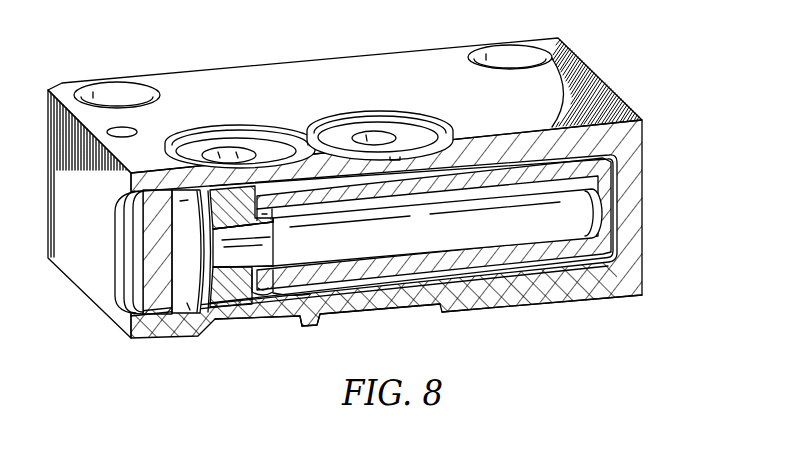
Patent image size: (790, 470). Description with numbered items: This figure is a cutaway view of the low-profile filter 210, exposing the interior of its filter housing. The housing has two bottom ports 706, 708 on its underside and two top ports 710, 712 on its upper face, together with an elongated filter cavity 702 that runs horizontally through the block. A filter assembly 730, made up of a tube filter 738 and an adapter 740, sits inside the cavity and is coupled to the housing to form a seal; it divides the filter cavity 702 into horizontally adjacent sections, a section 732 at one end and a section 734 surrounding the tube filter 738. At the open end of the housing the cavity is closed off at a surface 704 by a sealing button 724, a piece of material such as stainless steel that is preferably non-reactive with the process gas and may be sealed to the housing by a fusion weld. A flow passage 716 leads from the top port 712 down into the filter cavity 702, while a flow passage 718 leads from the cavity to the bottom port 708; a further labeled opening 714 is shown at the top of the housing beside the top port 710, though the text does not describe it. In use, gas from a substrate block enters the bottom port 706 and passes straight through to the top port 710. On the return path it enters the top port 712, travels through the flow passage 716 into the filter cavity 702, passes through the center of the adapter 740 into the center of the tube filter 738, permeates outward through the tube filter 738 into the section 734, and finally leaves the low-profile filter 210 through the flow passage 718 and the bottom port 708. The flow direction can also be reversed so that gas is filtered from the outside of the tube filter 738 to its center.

The low-profile filter 210 is at (321, 61).
The filter cavity 702 is at (503, 305).
The surface 704 is at (97, 297).
The bottom port 706 is at (402, 308).
The bottom port 708 is at (265, 314).
The top port 710 is at (408, 111).
The top port 712 is at (267, 126).
The port opening 714 is at (375, 137).
The flow passage 716 is at (234, 148).
The flow passage 718 is at (288, 313).
The sealing button 724 is at (134, 268).
The filter assembly 730 is at (617, 215).
The section 732 is at (163, 300).
The section 734 is at (361, 302).
The tube filter 738 is at (570, 296).
The adapter 740 is at (236, 302).